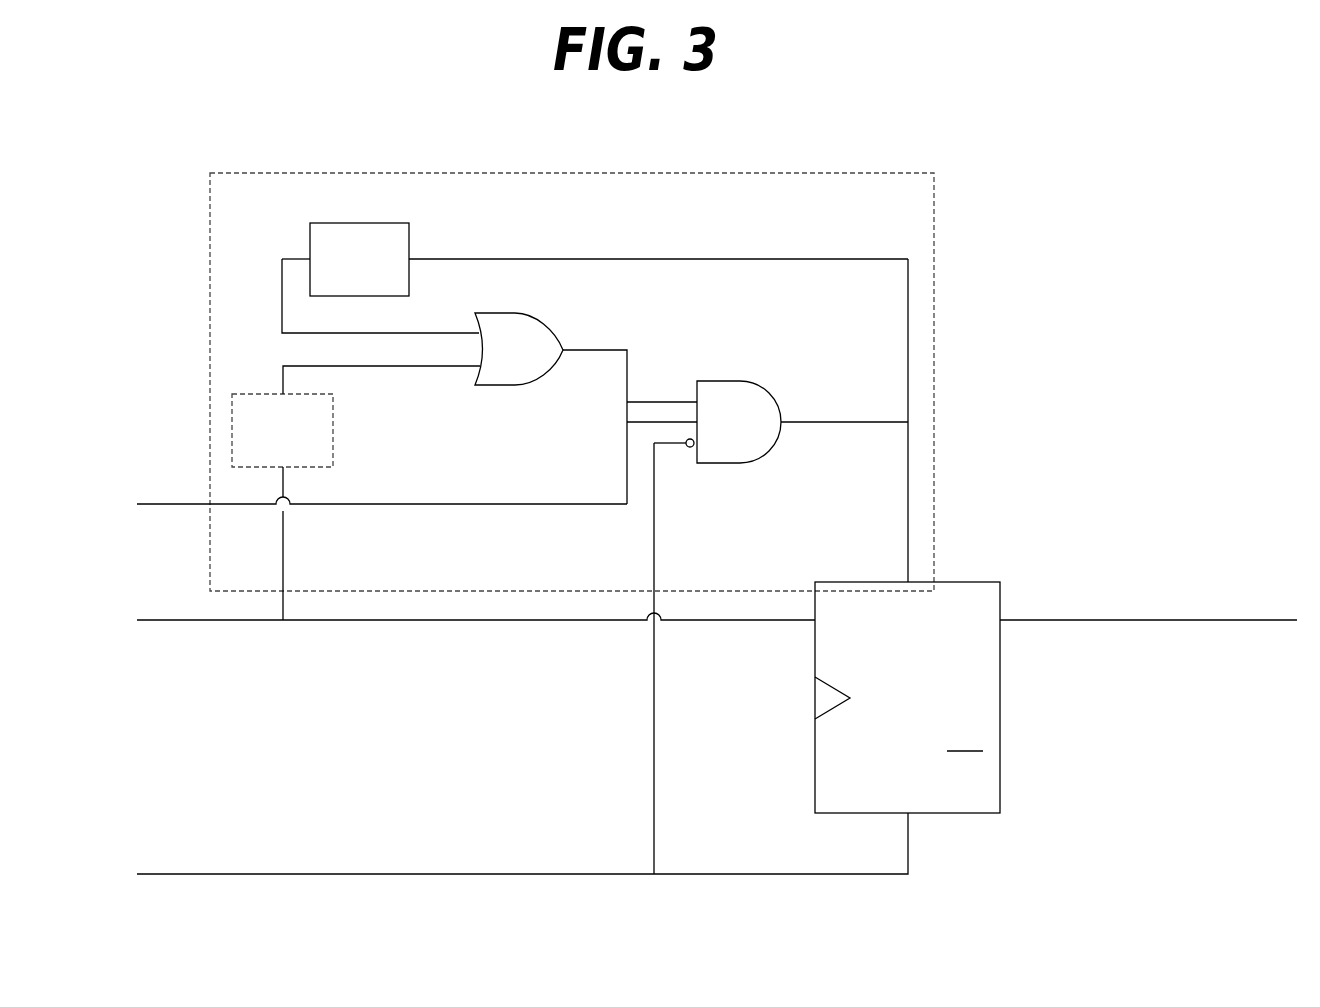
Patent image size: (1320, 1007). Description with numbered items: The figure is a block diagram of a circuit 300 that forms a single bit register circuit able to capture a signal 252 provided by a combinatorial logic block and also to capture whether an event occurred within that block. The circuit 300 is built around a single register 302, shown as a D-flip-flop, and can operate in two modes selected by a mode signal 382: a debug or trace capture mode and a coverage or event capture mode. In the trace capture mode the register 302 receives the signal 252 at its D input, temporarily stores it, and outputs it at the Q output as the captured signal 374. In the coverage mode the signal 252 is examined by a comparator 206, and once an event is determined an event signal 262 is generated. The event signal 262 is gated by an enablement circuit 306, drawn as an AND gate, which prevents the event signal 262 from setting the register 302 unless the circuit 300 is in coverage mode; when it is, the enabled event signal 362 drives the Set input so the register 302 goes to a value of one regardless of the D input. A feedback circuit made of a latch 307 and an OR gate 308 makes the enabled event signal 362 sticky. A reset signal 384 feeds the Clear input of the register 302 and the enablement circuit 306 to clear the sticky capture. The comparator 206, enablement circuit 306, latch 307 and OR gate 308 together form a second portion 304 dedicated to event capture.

The circuit 300 is at (775, 72).
The second portion 304 is at (930, 205).
The latch 307 is at (380, 285).
The comparator 206 is at (303, 456).
The event signal 262 is at (404, 396).
The OR gate 308 is at (535, 362).
The enablement circuit 306 is at (755, 434).
The enabled event signal 362 is at (838, 414).
The mode signal 382 is at (177, 497).
The signal 252 is at (177, 615).
The reset signal 384 is at (177, 867).
The captured signal 374 is at (1290, 616).
The register 302 is at (927, 709).